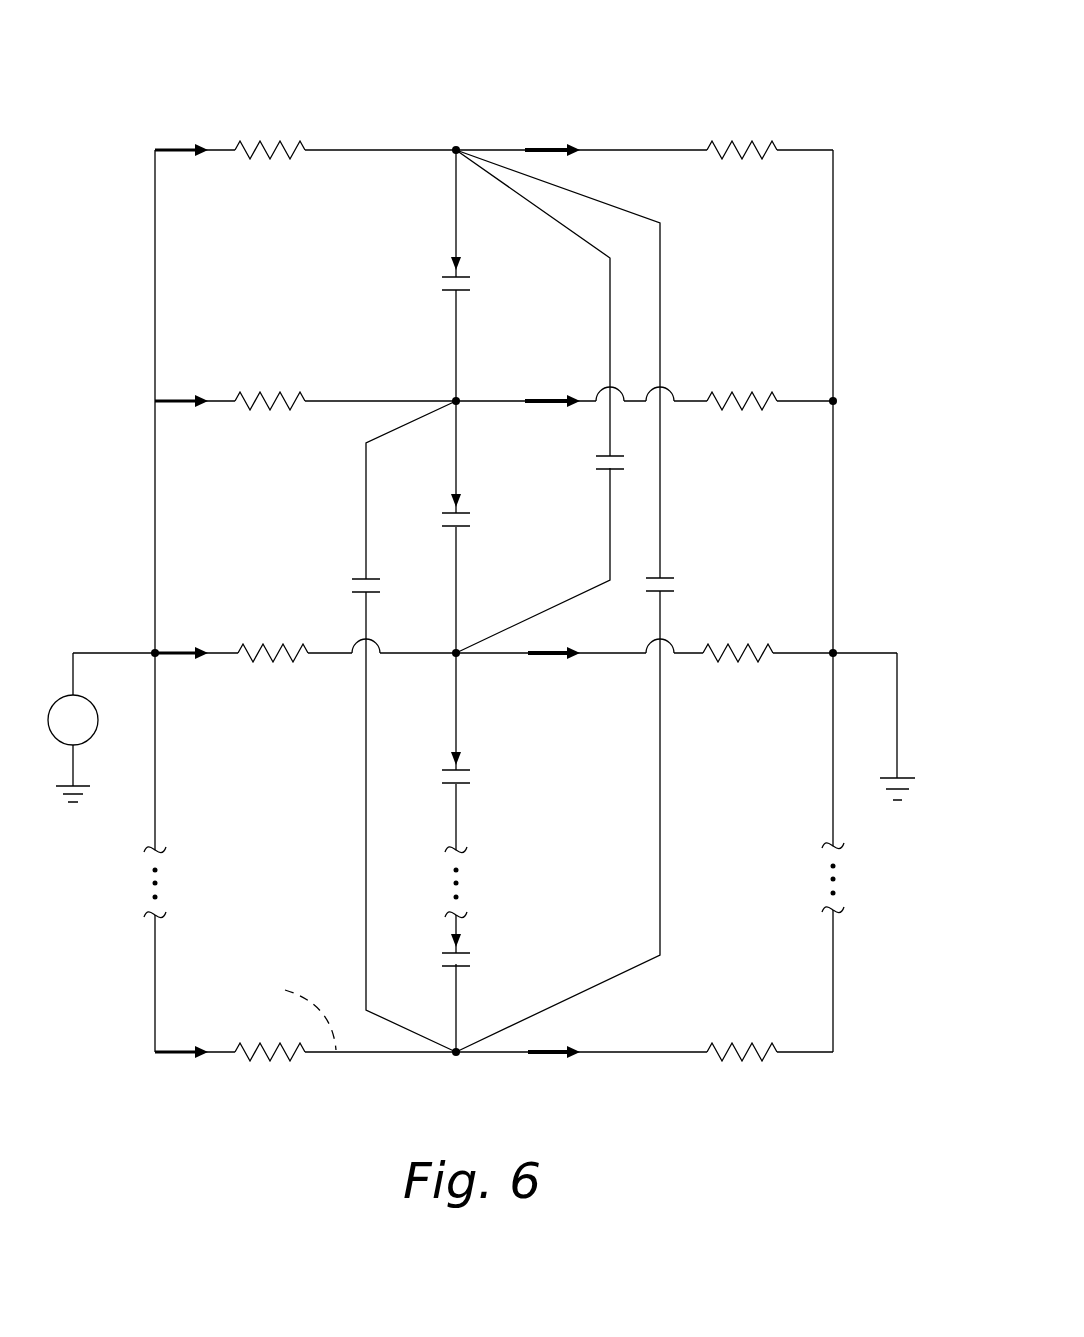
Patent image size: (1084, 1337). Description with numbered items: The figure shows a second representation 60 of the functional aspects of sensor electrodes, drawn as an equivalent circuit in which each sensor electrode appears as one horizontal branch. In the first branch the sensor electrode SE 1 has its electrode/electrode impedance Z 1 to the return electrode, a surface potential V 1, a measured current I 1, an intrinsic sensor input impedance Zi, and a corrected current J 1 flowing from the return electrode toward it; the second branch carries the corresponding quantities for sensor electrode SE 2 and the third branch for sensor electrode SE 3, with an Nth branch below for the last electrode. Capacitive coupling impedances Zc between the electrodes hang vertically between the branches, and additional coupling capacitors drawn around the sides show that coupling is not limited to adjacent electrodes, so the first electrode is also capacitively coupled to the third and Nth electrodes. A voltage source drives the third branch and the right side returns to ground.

The second representation 60 is at (680, 43).
The first conductor section SE1 1 is at (333, 148).
The second conductor section SE2 2 is at (333, 399).
The third conductor section SE3 3 is at (335, 651).